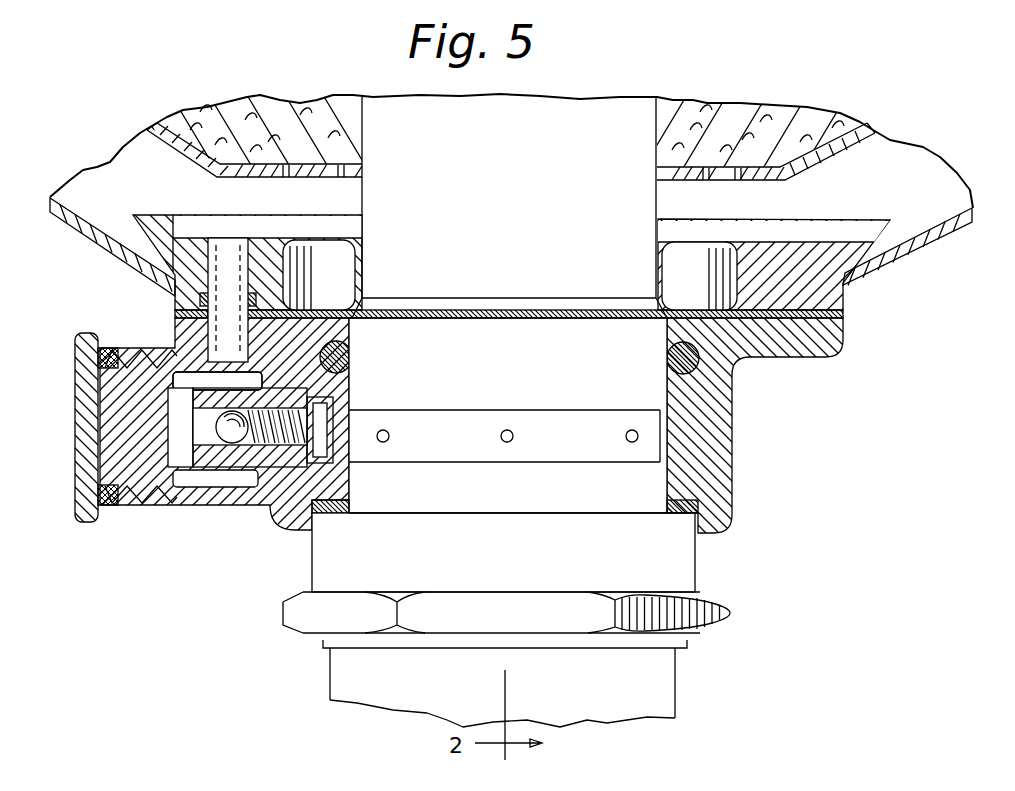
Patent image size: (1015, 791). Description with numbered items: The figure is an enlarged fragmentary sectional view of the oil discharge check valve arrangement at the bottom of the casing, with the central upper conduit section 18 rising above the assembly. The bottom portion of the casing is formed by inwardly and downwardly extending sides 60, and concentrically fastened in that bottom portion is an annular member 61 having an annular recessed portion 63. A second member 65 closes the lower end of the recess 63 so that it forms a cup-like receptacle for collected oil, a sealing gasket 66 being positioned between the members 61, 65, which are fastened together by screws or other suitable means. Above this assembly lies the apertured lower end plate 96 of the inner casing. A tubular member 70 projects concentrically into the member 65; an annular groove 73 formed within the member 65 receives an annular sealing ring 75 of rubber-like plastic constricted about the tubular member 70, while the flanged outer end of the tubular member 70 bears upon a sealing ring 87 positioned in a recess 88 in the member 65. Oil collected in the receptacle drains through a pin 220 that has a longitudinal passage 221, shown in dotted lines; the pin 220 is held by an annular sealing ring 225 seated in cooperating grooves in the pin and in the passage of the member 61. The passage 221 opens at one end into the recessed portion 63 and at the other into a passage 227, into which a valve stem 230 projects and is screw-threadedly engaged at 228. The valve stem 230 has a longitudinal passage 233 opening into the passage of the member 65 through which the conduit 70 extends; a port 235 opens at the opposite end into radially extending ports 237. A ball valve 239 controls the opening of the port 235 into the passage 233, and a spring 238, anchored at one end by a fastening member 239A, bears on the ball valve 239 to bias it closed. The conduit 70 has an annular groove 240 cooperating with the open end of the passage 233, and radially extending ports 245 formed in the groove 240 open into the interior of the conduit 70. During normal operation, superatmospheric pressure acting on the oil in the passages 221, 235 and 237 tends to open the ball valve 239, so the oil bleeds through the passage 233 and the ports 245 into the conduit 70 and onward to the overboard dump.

The upper conduit section 18 is at (525, 148).
The lower end plate 96 is at (511, 151).
The inwardly and downwardly extending sides 60 is at (52, 213).
The annular member 61 is at (124, 252).
The annular recessed portion 63 is at (282, 245).
The second member 65 is at (733, 399).
The sealing gasket 66 is at (847, 316).
The tubular member 70 is at (550, 503).
The annular groove 73 is at (345, 333).
The annular sealing ring 75 is at (347, 358).
The sealing ring 87 is at (338, 507).
The recess 88 is at (667, 513).
The pin 220 is at (205, 240).
The passage 221 is at (200, 299).
The annular sealing ring 225 is at (180, 313).
The passage 227 is at (190, 372).
The screw threaded engagement 228 is at (117, 460).
The valve stem 230 is at (83, 360).
The passage 233 is at (264, 448).
The port 235 is at (216, 427).
The radially extending ports 237 is at (172, 403).
The spring 238 is at (217, 381).
The ball valve 239 is at (233, 448).
The fastening member 239A is at (333, 410).
The annular groove 240 is at (572, 425).
The radially extending ports 245 is at (387, 443).